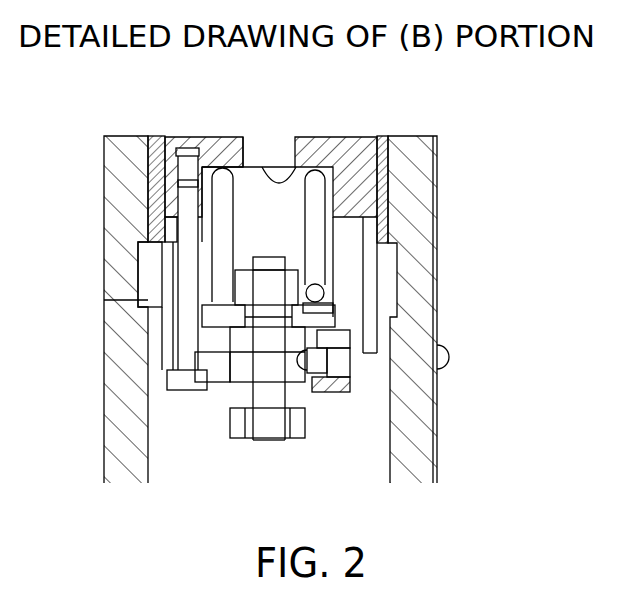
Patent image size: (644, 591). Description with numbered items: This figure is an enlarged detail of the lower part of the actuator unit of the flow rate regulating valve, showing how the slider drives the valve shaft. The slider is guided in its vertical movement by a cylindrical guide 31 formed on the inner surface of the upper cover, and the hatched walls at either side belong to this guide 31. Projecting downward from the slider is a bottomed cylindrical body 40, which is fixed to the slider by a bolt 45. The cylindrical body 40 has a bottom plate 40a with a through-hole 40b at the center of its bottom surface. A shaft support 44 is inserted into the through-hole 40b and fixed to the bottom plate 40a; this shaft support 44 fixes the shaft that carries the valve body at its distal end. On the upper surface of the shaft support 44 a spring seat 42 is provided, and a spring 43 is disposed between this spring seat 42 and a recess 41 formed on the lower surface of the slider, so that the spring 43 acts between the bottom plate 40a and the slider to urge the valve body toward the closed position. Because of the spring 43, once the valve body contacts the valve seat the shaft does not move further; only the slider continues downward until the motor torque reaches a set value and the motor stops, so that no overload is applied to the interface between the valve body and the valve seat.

The cylindrical guide 31 is at (308, 301).
The cylindrical body 40 is at (325, 253).
The bottom plate 40a is at (495, 340).
The through-hole 40b is at (432, 361).
The recess 41 is at (286, 197).
The spring seat 42 is at (91, 289).
The spring 43 is at (330, 189).
The shaft support 44 is at (184, 348).
The bolt 45 is at (122, 375).